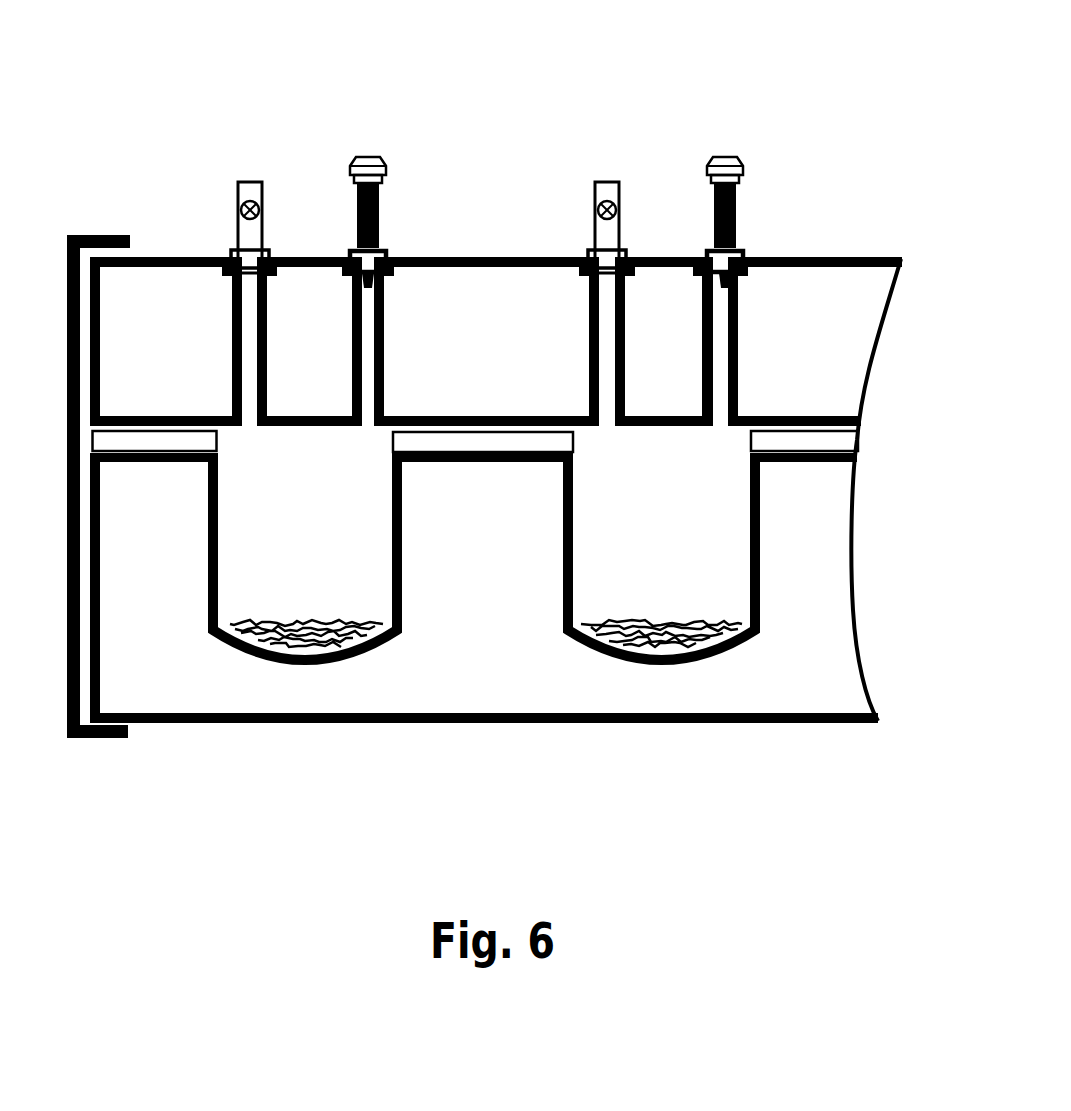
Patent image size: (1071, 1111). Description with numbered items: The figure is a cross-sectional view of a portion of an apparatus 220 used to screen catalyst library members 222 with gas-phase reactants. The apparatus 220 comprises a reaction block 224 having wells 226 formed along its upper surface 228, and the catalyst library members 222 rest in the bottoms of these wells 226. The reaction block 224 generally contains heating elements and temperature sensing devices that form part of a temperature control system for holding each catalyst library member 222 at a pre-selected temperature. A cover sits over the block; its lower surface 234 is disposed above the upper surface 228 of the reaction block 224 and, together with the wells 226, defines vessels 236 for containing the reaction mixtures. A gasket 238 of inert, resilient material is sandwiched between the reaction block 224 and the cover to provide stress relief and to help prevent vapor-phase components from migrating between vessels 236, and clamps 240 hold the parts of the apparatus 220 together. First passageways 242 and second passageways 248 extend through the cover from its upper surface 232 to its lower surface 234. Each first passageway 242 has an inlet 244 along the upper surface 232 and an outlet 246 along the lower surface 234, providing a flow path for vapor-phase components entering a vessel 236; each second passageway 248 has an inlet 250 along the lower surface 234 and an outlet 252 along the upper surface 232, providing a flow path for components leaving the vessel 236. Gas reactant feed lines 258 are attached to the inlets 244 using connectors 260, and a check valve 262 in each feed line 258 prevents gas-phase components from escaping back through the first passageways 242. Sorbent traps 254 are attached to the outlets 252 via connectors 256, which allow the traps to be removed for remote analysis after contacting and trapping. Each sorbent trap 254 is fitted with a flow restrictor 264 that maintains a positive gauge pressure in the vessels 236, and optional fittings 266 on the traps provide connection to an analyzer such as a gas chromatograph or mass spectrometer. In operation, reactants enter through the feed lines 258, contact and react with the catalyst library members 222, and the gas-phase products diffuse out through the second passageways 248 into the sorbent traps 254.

The apparatus 220 is at (834, 92).
The catalyst library members 222 is at (301, 621).
The reaction block 224 is at (836, 686).
The wells 226 is at (402, 508).
The upper surface 228 is at (783, 451).
The upper surface 232 is at (472, 260).
The lower surface 234 is at (326, 433).
The vessels 236 is at (240, 528).
The gasket 238 is at (139, 440).
The clamps 240 is at (110, 233).
The first passageways 242 is at (251, 328).
The inlets 244 is at (228, 294).
The outlets 246 is at (251, 416).
The second passageways 248 is at (367, 334).
The inlets 250 is at (366, 420).
The outlets 252 is at (385, 299).
The sorbent traps 254 is at (380, 203).
The connectors 256 is at (378, 254).
The gas reactant feed lines 258 is at (263, 193).
The connectors 260 is at (270, 256).
The check valve 262 is at (251, 182).
The flow restrictor 264 is at (387, 165).
The fittings 266 is at (368, 157).